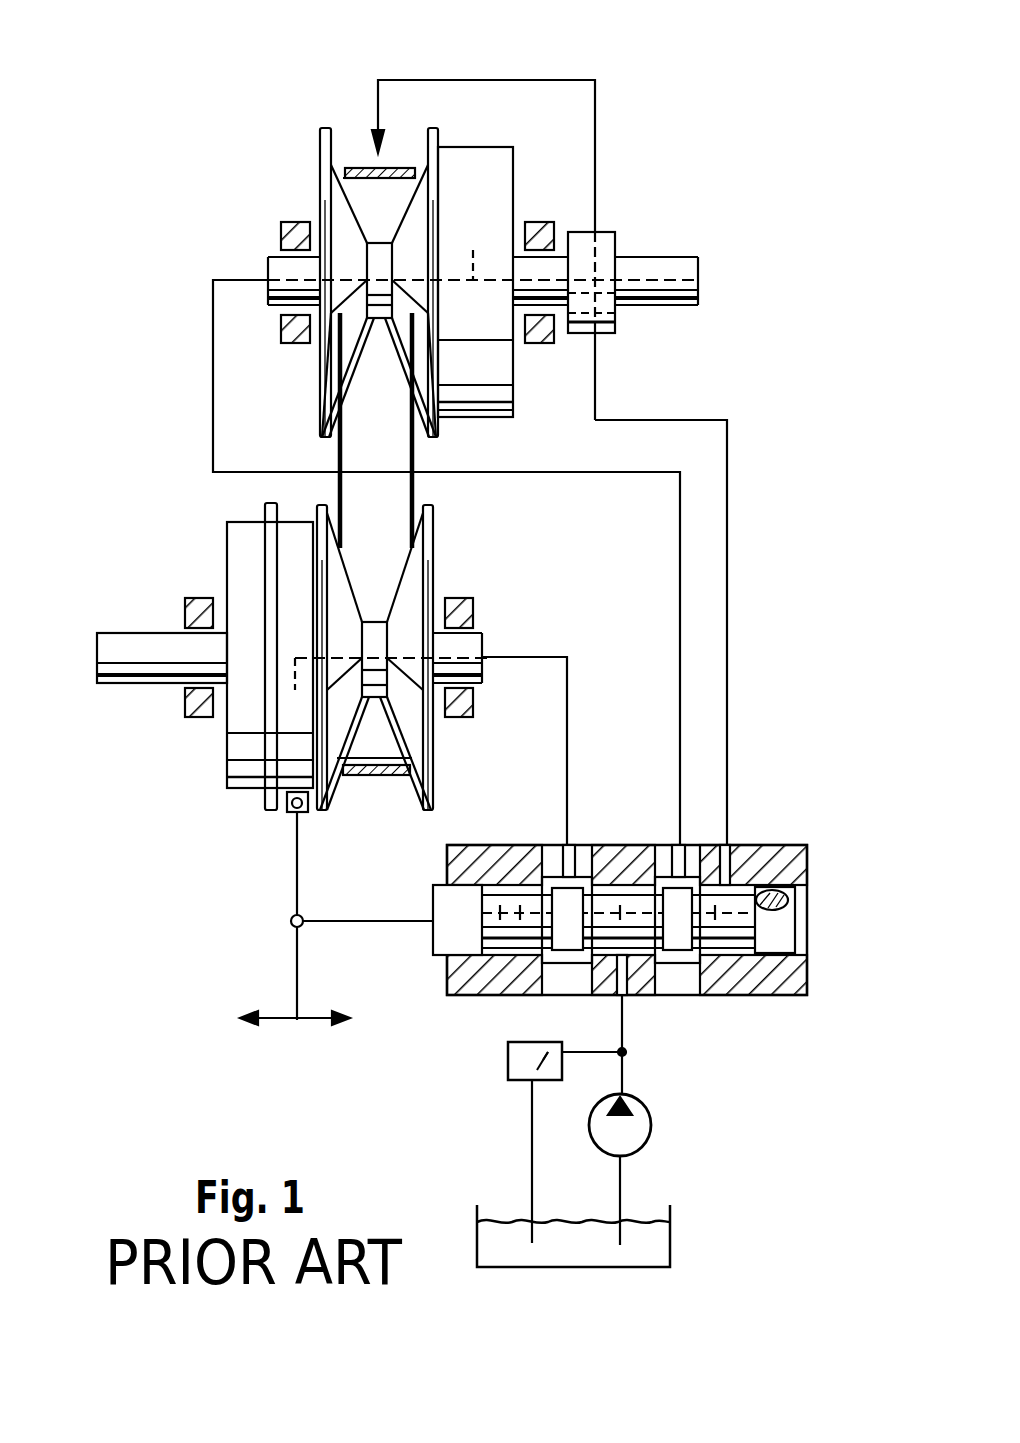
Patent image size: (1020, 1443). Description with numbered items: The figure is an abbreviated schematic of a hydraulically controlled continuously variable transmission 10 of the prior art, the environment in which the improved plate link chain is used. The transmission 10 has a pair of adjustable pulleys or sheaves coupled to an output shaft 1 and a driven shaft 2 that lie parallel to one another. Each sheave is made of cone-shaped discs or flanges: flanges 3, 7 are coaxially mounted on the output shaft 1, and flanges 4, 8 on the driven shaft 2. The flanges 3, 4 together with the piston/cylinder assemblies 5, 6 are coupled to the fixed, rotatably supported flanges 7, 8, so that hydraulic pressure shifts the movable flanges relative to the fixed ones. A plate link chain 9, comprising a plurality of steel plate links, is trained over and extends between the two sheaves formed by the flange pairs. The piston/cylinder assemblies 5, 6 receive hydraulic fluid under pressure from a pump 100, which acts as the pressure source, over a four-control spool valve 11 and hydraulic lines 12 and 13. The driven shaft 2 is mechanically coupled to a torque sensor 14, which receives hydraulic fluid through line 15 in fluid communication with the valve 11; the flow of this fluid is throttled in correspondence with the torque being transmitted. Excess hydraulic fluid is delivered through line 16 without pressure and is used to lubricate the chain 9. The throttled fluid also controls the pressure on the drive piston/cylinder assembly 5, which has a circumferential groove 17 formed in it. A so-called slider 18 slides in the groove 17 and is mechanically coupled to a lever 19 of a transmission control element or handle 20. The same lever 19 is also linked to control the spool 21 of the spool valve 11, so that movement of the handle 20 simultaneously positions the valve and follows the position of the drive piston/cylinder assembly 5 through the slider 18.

The output shaft 1 is at (131, 640).
The driven shaft 2 is at (280, 270).
The cone-shaped disc or flange 3 is at (351, 638).
The cone-shaped disc or flange 4 is at (416, 263).
The drive piston/cylinder assembly 5 is at (242, 544).
The piston/cylinder assembly 6 is at (488, 217).
The fixed flange 7 is at (412, 638).
The fixed flange 8 is at (327, 163).
The plate link chain 9 is at (362, 166).
The continuously variable transmission 10 is at (707, 113).
The four-control spool valve 11 is at (777, 862).
The hydraulic line 12 is at (571, 748).
The hydraulic line 13 is at (682, 628).
The torque sensor 14 is at (610, 243).
The line 15 is at (729, 585).
The line 16 is at (494, 76).
The circumferential groove 17 is at (300, 588).
The slider 18 is at (294, 815).
The lever 19 is at (296, 868).
The transmission control element or handle 20 is at (291, 1037).
The spool 21 is at (778, 913).
The pump 100 is at (640, 1132).